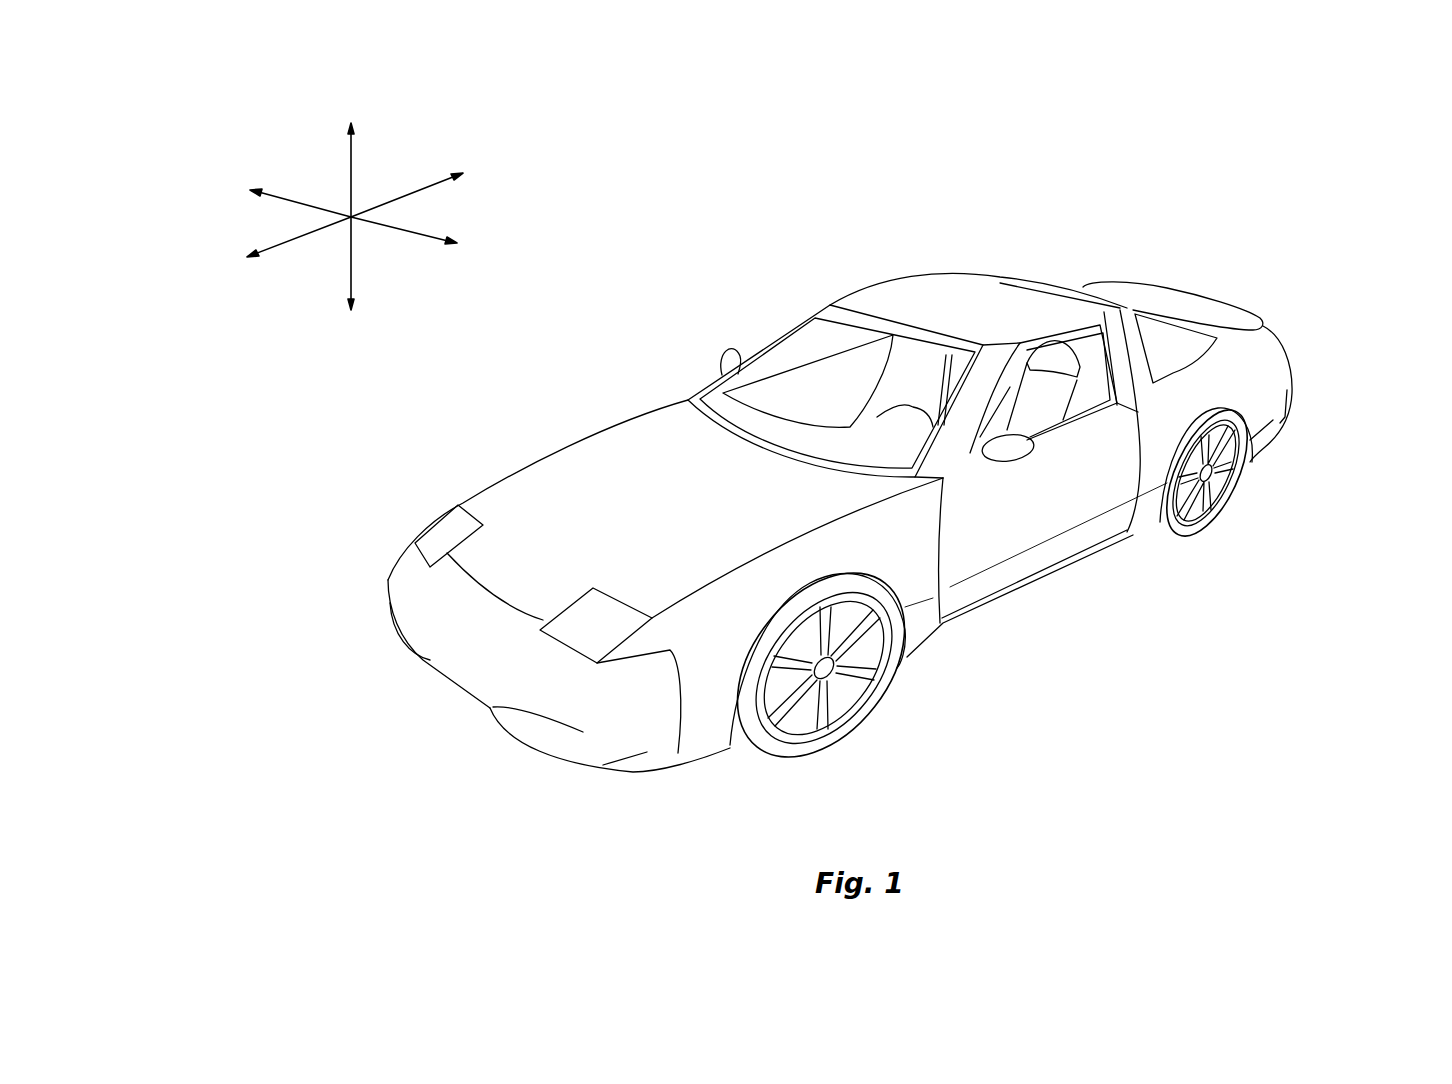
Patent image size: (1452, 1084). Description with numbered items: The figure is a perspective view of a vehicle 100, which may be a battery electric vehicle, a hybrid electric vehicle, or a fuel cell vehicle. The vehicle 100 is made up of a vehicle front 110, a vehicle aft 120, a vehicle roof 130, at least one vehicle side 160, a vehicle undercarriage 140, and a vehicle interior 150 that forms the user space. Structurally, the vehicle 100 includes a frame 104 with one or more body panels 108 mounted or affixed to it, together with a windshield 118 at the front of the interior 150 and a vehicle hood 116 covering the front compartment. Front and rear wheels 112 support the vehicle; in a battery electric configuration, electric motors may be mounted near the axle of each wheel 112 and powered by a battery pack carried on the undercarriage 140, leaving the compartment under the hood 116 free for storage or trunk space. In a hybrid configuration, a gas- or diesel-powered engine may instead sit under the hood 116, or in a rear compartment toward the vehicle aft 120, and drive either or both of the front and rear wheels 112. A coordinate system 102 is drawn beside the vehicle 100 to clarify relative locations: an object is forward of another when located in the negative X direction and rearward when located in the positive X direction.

The vehicle 100 is at (852, 458).
The coordinate system 102 is at (351, 217).
The frame 104 is at (1047, 577).
The body panels 108 is at (438, 623).
The vehicle front 110 is at (408, 732).
The wheel 112 is at (847, 730).
The vehicle hood 116 is at (565, 472).
The windshield 118 is at (808, 325).
The vehicle aft 120 is at (1277, 304).
The vehicle roof 130 is at (966, 295).
The vehicle undercarriage 140 is at (975, 633).
The vehicle interior 150 is at (800, 378).
The vehicle side 160 is at (1072, 513).